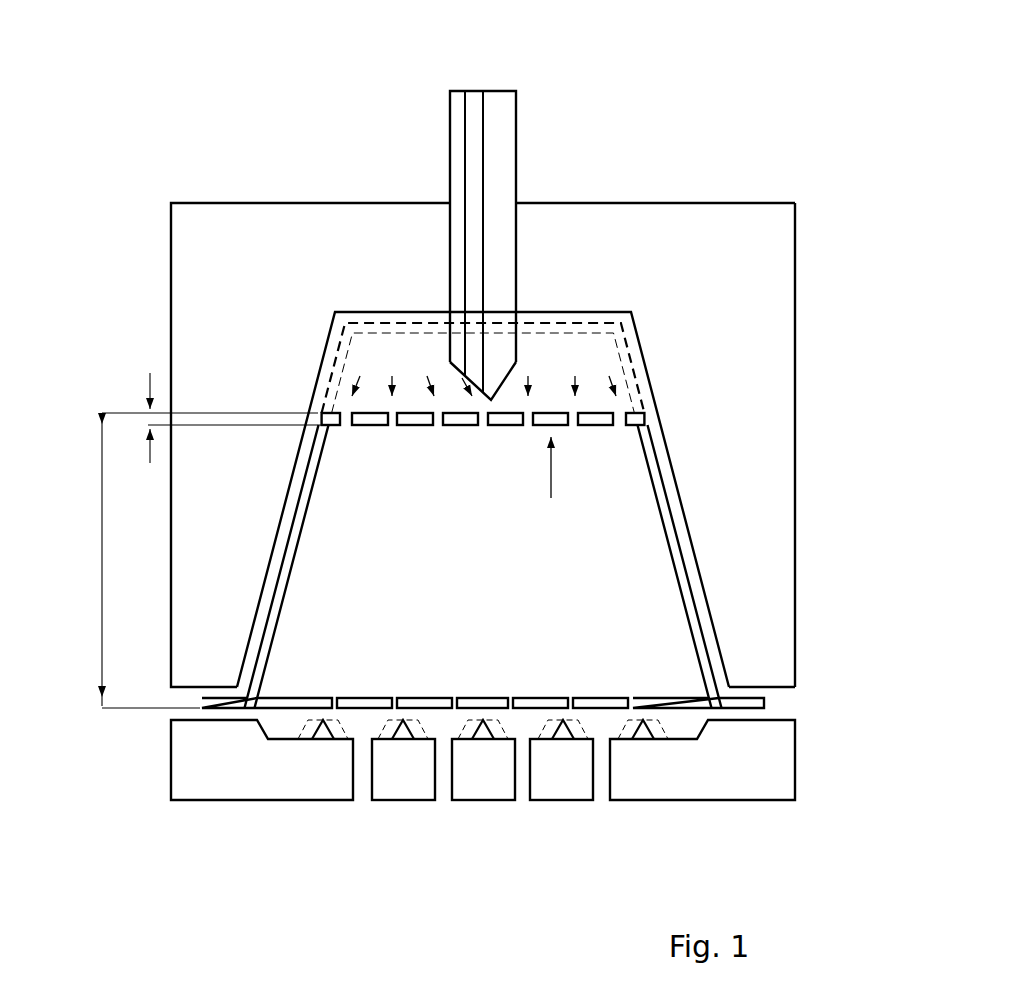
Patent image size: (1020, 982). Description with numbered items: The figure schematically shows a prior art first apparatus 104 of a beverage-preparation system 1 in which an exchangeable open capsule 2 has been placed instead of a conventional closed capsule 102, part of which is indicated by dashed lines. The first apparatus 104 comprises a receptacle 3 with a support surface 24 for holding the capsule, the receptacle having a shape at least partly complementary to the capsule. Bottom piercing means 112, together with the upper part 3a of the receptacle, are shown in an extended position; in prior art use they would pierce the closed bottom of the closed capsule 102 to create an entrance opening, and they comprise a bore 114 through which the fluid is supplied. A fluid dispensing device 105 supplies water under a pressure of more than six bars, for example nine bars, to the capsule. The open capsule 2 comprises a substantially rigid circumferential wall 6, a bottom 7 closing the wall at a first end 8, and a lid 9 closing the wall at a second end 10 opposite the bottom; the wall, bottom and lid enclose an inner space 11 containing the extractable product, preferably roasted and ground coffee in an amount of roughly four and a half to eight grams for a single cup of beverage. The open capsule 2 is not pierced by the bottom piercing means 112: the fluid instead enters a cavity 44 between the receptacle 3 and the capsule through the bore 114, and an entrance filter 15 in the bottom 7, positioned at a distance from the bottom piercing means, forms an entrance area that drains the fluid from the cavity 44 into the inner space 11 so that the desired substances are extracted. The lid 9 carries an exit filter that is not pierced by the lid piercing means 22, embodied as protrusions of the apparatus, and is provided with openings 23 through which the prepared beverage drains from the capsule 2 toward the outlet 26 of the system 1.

The system 1 is at (800, 99).
The exchangeable open capsule 2 is at (681, 528).
The receptacle 3 is at (800, 292).
The upper part of the receptacle 3a is at (736, 256).
The circumferential wall 6 is at (685, 572).
The bottom 7 is at (543, 418).
The first end 8 is at (646, 420).
The lid 9 is at (601, 704).
The second end 10 is at (712, 689).
The inner space 11 is at (496, 571).
The entrance filter 15 is at (532, 409).
The lid piercing means 22 is at (323, 727).
The openings 23 is at (575, 690).
The support surface 24 is at (765, 761).
The outlet 26 is at (363, 767).
The cavity 44 is at (420, 366).
The first capsule 102 is at (380, 337).
The first apparatus 104 is at (798, 411).
The fluid dispensing device 105 is at (517, 98).
The bottom piercing means 112 is at (517, 189).
The bore 114 is at (473, 90).